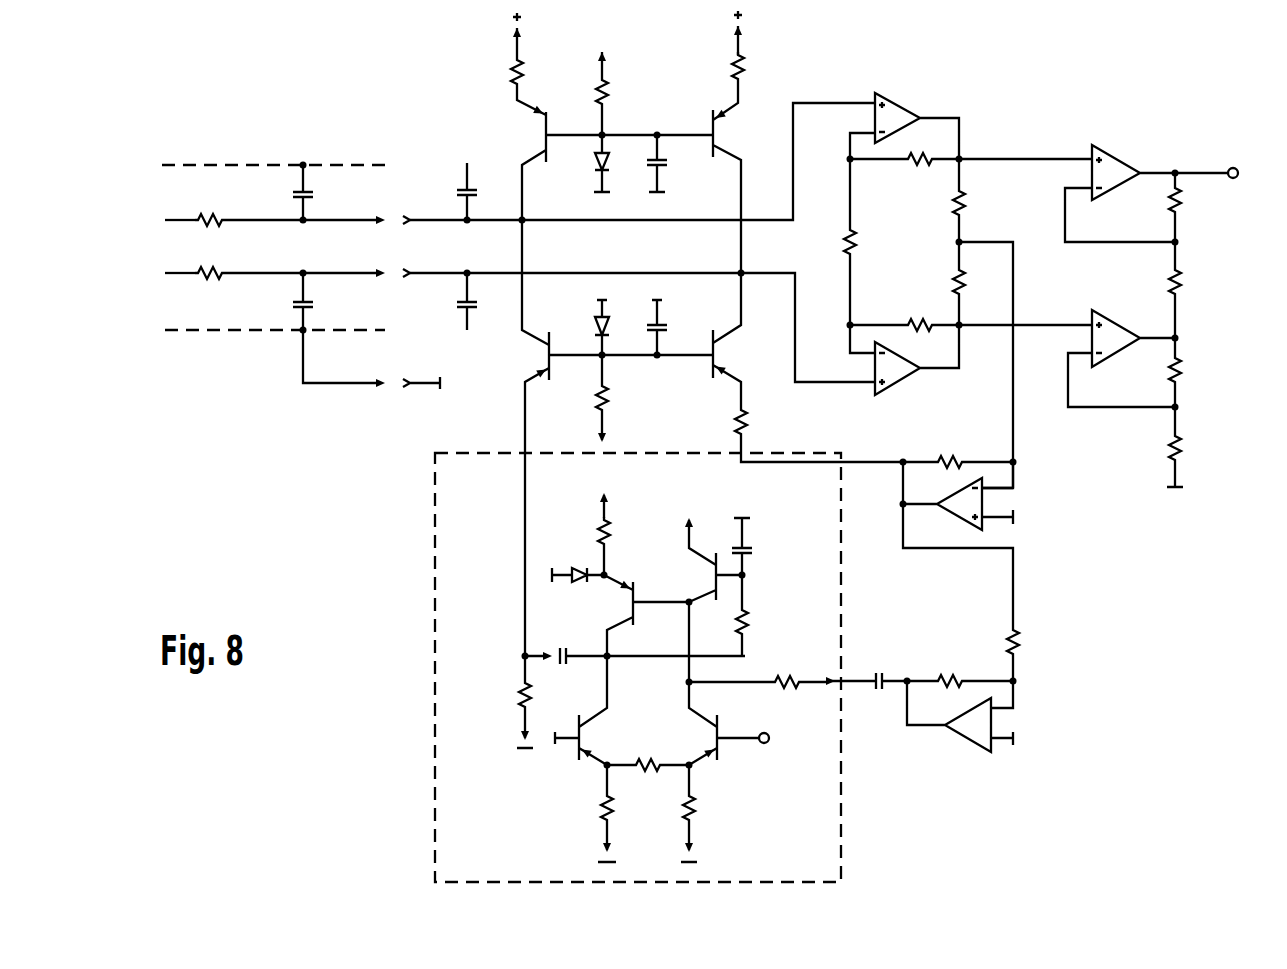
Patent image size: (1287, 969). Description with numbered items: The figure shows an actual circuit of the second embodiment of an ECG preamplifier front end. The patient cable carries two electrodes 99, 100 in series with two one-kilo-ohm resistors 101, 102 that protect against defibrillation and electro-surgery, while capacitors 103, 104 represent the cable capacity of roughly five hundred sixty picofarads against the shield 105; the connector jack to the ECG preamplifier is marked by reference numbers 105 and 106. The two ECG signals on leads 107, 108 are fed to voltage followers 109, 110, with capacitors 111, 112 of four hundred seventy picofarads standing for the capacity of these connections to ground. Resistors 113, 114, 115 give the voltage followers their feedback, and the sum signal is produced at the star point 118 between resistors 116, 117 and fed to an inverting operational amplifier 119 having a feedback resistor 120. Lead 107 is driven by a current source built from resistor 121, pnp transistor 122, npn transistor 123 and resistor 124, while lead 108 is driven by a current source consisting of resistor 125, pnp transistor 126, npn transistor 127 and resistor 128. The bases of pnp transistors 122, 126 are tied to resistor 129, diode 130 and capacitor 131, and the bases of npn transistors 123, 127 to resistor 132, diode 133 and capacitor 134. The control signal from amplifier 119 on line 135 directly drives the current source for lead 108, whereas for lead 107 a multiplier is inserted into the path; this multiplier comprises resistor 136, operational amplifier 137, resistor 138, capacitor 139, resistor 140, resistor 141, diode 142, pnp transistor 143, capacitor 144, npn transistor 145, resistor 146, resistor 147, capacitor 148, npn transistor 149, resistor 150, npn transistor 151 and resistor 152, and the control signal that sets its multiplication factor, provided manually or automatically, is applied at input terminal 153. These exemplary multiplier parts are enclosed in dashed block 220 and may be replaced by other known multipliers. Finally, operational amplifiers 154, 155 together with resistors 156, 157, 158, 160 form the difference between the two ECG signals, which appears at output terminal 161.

The electrode 99 is at (167, 220).
The electrode 100 is at (167, 273).
The resistor 101 is at (215, 220).
The resistor 102 is at (218, 273).
The capacitor 103 is at (308, 197).
The capacitor 104 is at (308, 307).
The shield / connector jack 105 is at (393, 218).
The connector jack 106 is at (395, 276).
The ECG lead 107 is at (766, 213).
The ECG lead 108 is at (753, 270).
The voltage follower 109 is at (900, 113).
The voltage follower 110 is at (905, 372).
The capacitor 111 is at (473, 186).
The capacitor 112 is at (480, 317).
The resistor 113 is at (912, 168).
The resistor 114 is at (855, 245).
The resistor 115 is at (920, 312).
The resistor 116 is at (965, 200).
The resistor 117 is at (965, 278).
The star point 118 is at (963, 242).
The inverting operational amplifier 119 is at (985, 500).
The feedback resistor 120 is at (940, 458).
The resistor 121 is at (522, 72).
The pnp transistor 122 is at (538, 113).
The npn transistor 123 is at (535, 372).
The resistor 124 is at (520, 698).
The resistor 125 is at (743, 68).
The pnp transistor 126 is at (730, 118).
The npn transistor 127 is at (730, 368).
The resistor 128 is at (748, 425).
The resistor 129 is at (607, 95).
The diode 130 is at (595, 163).
The capacitor 131 is at (668, 165).
The resistor 132 is at (608, 398).
The diode 133 is at (595, 318).
The capacitor 134 is at (665, 320).
The line 135 is at (858, 465).
The resistor 136 is at (1020, 635).
The operational amplifier 137 is at (970, 735).
The resistor 138 is at (955, 668).
The capacitor 139 is at (870, 670).
The resistor 140 is at (783, 678).
The resistor 141 is at (610, 530).
The diode 142 is at (582, 568).
The pnp transistor 143 is at (617, 582).
The capacitor 144 is at (576, 652).
The npn transistor 145 is at (585, 760).
The resistor 146 is at (600, 808).
The resistor 147 is at (642, 760).
The capacitor 148 is at (750, 545).
The npn transistor 149 is at (697, 548).
The resistor 150 is at (748, 615).
The npn transistor 151 is at (712, 760).
The resistor 152 is at (695, 810).
The input terminal 153 is at (769, 740).
The operational amplifier 154 is at (1117, 168).
The operational amplifier 155 is at (1117, 332).
The resistor 156 is at (1182, 205).
The resistor 157 is at (1182, 285).
The resistor 158 is at (1182, 365).
The resistor 160 is at (1182, 448).
The output terminal 161 is at (1238, 170).
The dashed block 220 is at (841, 870).